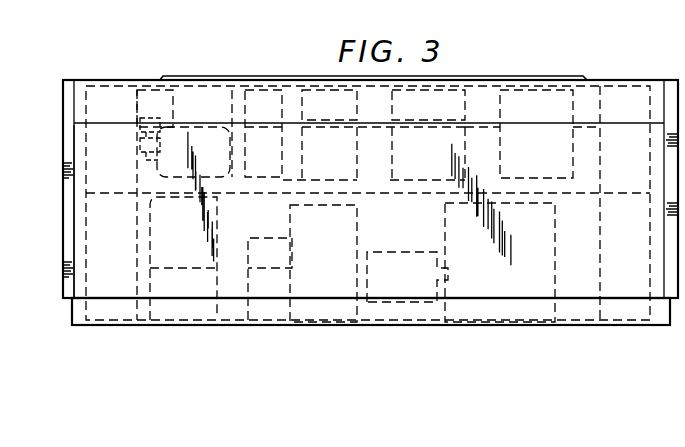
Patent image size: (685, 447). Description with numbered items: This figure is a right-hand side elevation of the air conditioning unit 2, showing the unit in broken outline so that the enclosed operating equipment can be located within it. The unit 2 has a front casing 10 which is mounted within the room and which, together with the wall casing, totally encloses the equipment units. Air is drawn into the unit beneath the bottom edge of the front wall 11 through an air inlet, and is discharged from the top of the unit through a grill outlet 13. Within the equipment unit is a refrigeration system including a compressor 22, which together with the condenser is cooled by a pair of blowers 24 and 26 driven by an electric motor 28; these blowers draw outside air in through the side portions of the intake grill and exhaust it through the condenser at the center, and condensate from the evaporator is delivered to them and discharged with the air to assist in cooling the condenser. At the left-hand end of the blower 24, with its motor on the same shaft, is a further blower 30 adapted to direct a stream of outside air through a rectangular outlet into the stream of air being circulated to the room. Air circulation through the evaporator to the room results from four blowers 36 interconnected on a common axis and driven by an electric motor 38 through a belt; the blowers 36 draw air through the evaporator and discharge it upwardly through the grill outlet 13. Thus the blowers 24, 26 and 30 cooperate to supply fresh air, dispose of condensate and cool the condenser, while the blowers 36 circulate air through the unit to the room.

The air conditioning unit 2 is at (58, 325).
The front casing 10 is at (62, 243).
The front wall 11 is at (96, 200).
The grill outlet 13 is at (540, 77).
The compressor 22 is at (168, 254).
The blower 24 is at (326, 289).
The blower 26 is at (528, 289).
The electric motor 28 is at (405, 290).
The blower 30 is at (265, 289).
The blowers 36 is at (292, 90).
The electric motor 38 is at (167, 127).